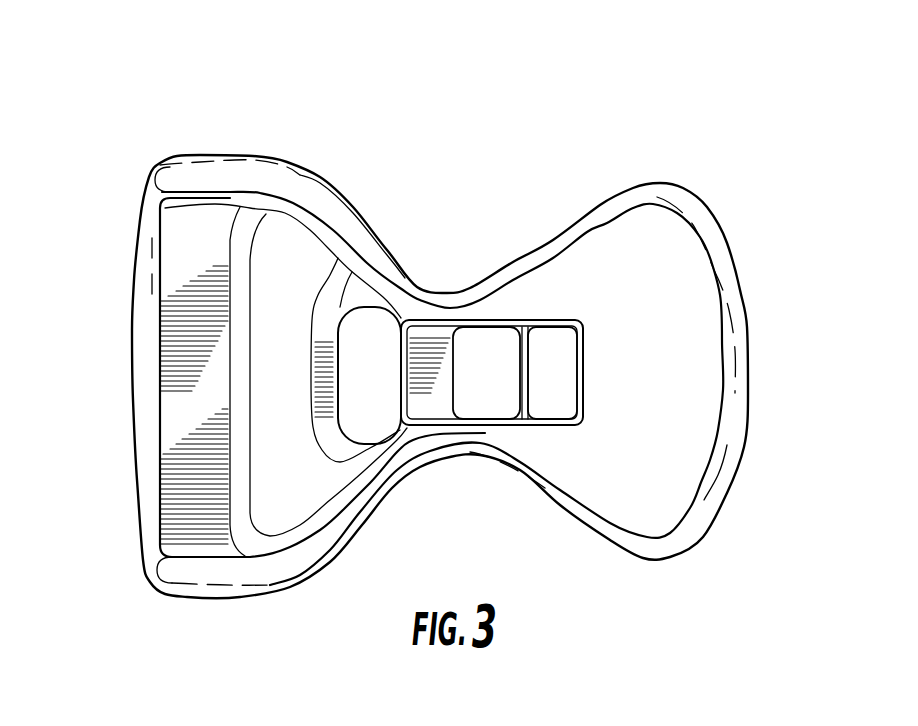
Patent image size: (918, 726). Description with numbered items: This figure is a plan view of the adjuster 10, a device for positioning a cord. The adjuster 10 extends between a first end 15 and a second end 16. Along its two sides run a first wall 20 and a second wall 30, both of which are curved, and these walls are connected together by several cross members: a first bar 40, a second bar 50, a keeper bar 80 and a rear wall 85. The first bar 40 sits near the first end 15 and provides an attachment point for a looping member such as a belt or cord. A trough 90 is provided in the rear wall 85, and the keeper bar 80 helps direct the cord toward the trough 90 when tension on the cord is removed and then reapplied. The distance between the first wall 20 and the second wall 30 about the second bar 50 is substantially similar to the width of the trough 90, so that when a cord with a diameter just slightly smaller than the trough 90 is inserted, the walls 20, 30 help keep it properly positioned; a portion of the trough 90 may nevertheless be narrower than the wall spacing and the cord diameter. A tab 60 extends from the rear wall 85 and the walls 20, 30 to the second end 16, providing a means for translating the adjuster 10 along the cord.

The adjuster 10 is at (758, 494).
The first end 15 is at (131, 396).
The second end 16 is at (747, 370).
The first wall 20 is at (303, 193).
The second wall 30 is at (280, 570).
The first bar 40 is at (157, 308).
The second bar 50 is at (423, 340).
The tab 60 is at (705, 335).
The keeper bar 80 is at (337, 320).
The rear wall 85 is at (547, 373).
The trough 90 is at (512, 372).